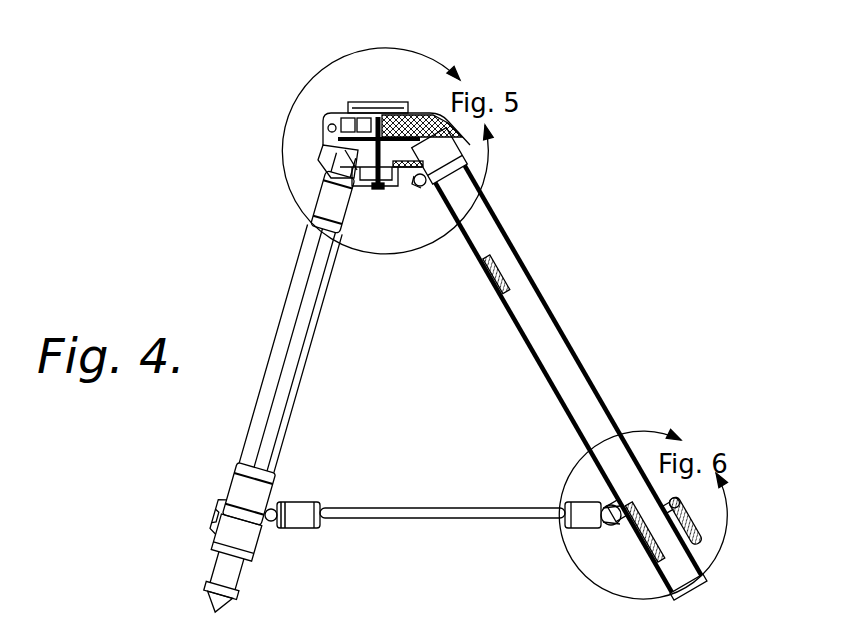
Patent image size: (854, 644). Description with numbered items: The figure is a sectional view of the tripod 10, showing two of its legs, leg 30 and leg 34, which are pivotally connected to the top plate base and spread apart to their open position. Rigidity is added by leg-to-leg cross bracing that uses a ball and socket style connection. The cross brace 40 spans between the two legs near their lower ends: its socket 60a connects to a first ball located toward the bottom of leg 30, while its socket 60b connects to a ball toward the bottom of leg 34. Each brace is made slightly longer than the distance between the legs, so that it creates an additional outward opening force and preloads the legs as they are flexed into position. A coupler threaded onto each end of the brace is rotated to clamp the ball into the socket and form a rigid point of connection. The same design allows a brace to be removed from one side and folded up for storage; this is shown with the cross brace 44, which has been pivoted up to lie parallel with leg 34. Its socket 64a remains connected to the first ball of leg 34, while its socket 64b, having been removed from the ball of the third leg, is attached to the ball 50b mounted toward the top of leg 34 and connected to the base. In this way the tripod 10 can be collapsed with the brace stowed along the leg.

The tripod 10 is at (190, 258).
The leg 30 is at (557, 317).
The leg 34 is at (285, 337).
The cross brace 44 is at (288, 373).
The cross brace 40 is at (400, 510).
The ball 50b is at (419, 190).
The socket 60a is at (590, 523).
The socket 60b is at (303, 527).
The socket 64a is at (247, 500).
The socket 64b is at (330, 206).